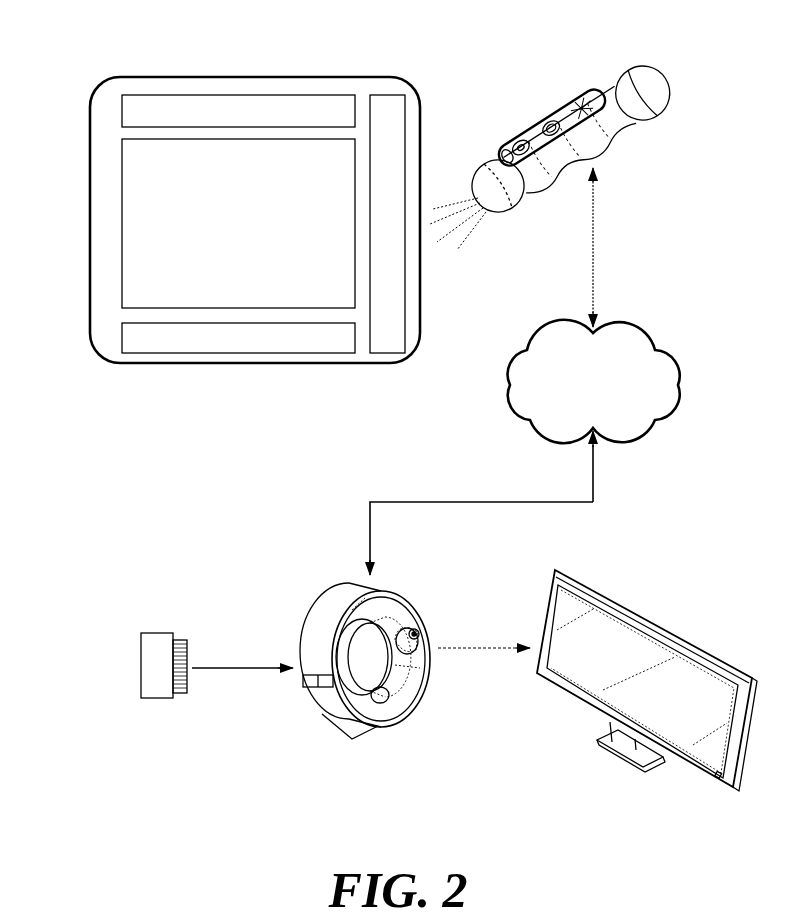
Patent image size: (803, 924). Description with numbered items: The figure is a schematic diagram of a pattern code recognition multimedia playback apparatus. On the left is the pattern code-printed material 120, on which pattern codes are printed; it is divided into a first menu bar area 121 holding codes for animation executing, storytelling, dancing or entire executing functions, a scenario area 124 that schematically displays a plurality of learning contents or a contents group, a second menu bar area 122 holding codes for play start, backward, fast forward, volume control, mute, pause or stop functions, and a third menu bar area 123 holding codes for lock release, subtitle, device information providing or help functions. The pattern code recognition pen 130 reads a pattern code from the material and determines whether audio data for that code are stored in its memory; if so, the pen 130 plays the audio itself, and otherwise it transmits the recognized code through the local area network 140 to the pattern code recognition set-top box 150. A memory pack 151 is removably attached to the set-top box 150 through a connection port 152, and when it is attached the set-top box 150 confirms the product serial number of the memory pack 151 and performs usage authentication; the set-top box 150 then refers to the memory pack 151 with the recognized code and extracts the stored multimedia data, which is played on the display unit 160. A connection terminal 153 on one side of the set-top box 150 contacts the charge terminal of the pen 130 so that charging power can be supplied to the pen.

The pattern code-printed material 120 is at (365, 76).
The first menu bar area 121 is at (406, 121).
The second menu bar area 122 is at (122, 338).
The third menu bar area 123 is at (122, 111).
The scenario area 124 is at (122, 225).
The pattern code recognition pen 130 is at (645, 68).
The local area network 140 is at (649, 331).
The pattern code recognition set-top box 150 is at (372, 677).
The memory pack 151 is at (163, 633).
The connection port 152 is at (308, 674).
The connection terminal 153 is at (424, 637).
The display unit 160 is at (657, 621).